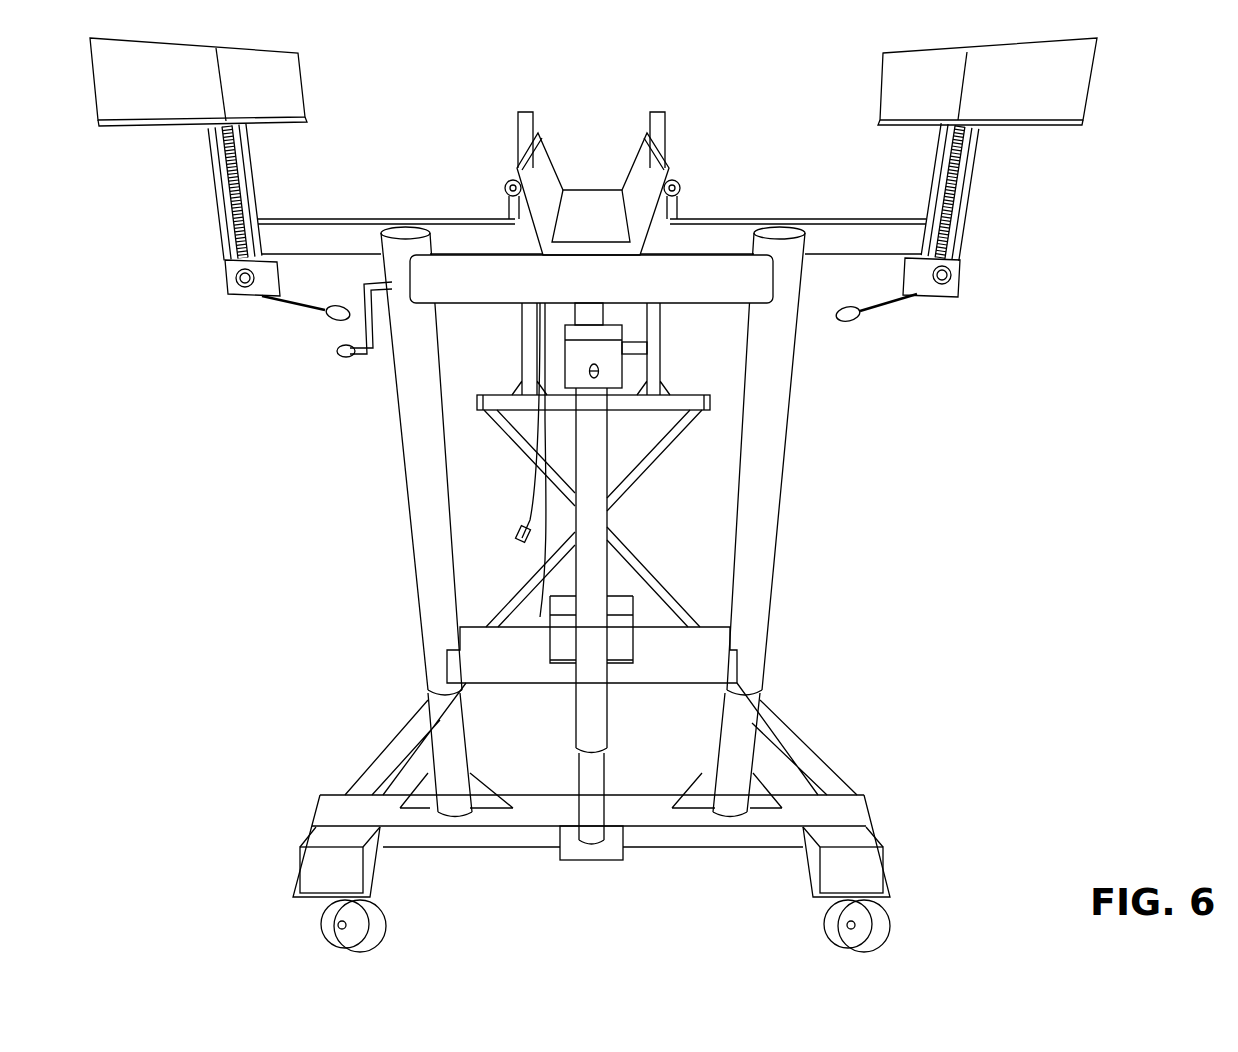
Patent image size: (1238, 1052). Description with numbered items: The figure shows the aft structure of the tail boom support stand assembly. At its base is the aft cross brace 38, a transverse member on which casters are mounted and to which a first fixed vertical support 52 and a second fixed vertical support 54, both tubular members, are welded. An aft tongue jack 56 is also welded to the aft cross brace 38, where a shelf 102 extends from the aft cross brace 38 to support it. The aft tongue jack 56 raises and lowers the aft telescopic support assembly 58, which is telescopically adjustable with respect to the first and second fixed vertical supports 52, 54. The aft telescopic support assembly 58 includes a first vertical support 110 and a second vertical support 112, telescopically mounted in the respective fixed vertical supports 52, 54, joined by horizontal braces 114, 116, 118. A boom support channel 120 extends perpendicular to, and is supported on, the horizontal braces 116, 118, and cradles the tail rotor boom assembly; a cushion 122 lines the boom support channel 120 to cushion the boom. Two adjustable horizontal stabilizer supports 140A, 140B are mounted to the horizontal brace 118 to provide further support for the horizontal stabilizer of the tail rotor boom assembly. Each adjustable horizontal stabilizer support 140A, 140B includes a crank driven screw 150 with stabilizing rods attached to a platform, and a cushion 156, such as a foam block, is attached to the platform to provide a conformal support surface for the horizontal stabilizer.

The aft cross brace 38 is at (487, 837).
The first fixed vertical support 52 is at (443, 753).
The second fixed vertical support 54 is at (742, 748).
The aft tongue jack 56 is at (603, 570).
The aft telescopic support assembly 58 is at (375, 427).
The shelf 102 is at (597, 848).
The first vertical support 110 is at (408, 452).
The second vertical support 112 is at (760, 480).
The horizontal brace 114 is at (700, 633).
The horizontal brace 116 is at (703, 306).
The horizontal brace 118 is at (340, 233).
The boom support channel 120 is at (653, 240).
The cushion 122 is at (608, 223).
The adjustable horizontal stabilizer support 140A is at (230, 283).
The adjustable horizontal stabilizer support 140B is at (958, 285).
The crank driven screw 150 is at (223, 153).
The cushion 156 is at (296, 77).